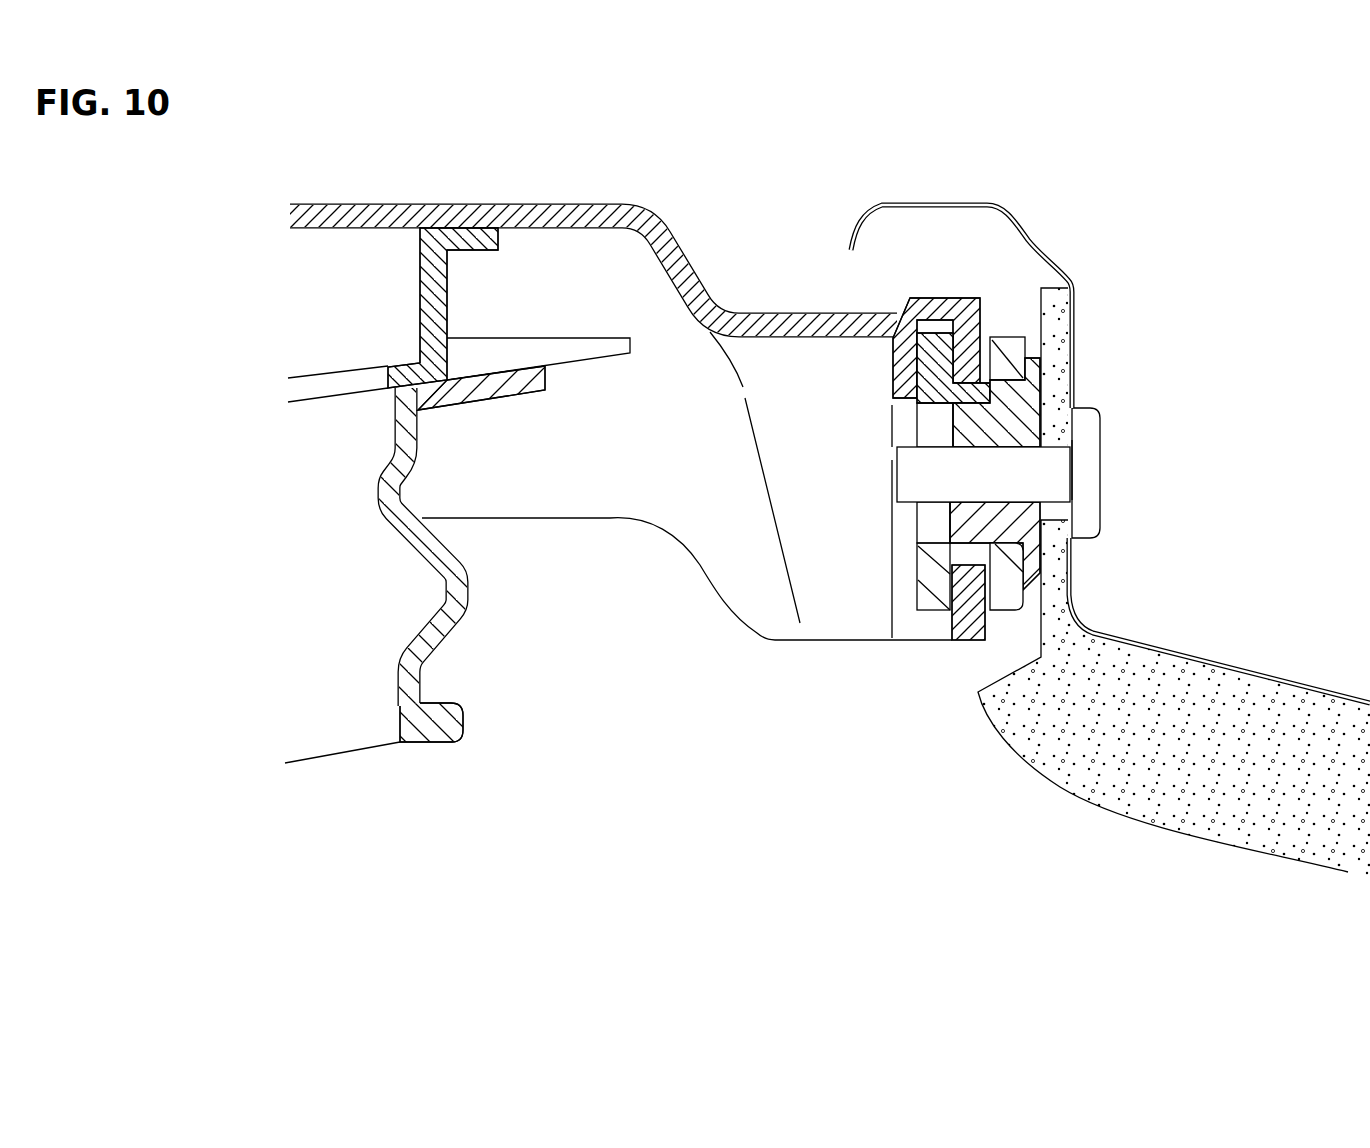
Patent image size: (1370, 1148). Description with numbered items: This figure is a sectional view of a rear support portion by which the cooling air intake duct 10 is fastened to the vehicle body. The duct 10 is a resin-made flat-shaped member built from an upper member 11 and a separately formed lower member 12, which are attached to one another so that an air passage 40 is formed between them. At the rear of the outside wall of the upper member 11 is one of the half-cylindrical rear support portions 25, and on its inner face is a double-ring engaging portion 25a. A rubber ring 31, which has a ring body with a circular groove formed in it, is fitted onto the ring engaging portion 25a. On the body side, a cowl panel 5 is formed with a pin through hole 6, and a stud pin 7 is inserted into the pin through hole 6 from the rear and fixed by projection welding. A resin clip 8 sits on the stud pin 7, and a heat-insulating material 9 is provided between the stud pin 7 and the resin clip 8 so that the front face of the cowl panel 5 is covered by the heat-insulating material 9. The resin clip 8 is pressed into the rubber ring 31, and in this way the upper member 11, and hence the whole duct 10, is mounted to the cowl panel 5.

The cowl panel 5 is at (1213, 663).
The pin through holes 6 is at (1100, 432).
The stud pins 7 is at (1103, 495).
The resin clips 8 is at (950, 520).
The heat-insulating material 9 is at (1184, 830).
The duct 10 is at (467, 206).
The upper member 11 is at (592, 206).
The lower member 12 is at (448, 286).
The rear support portions 25 is at (798, 312).
The ring engaging portions 25a is at (985, 363).
The rubber ring 31 is at (930, 618).
The air passage 40 is at (366, 309).